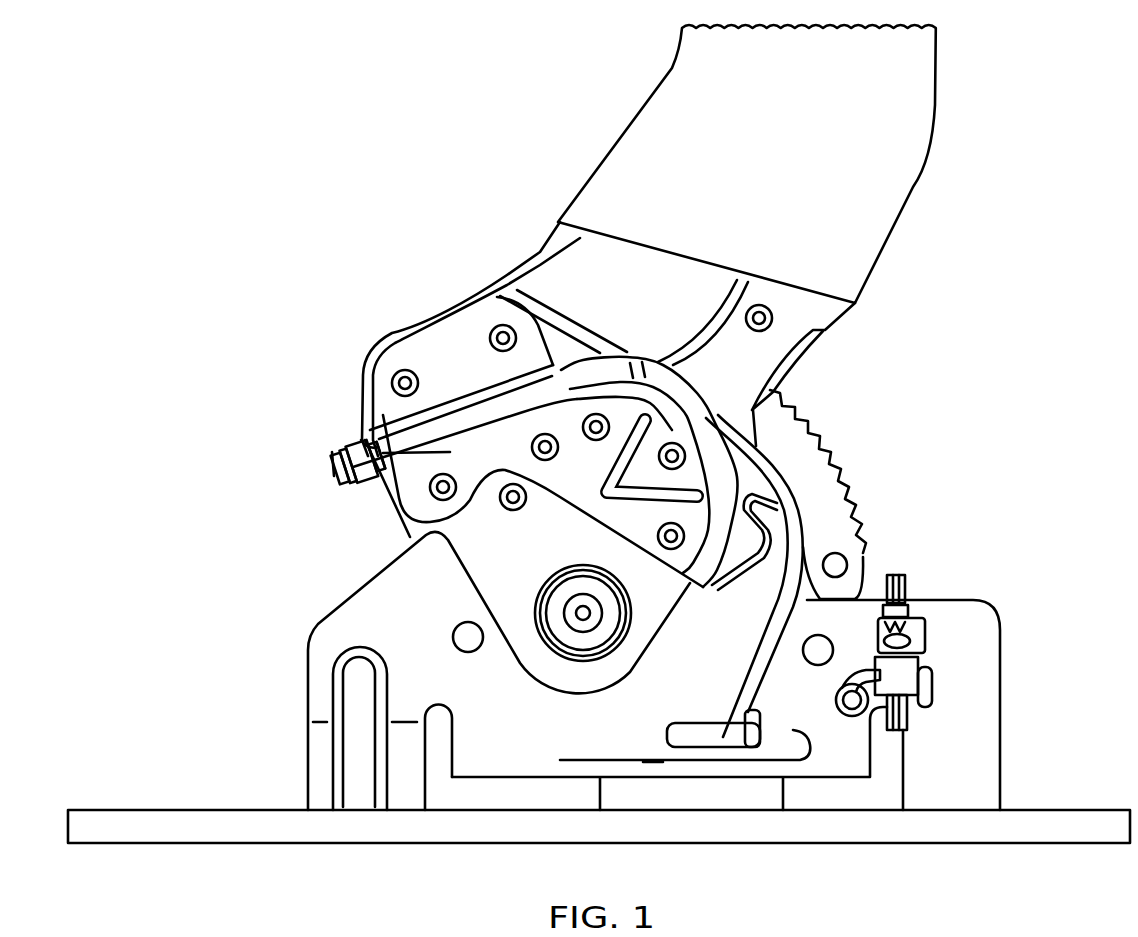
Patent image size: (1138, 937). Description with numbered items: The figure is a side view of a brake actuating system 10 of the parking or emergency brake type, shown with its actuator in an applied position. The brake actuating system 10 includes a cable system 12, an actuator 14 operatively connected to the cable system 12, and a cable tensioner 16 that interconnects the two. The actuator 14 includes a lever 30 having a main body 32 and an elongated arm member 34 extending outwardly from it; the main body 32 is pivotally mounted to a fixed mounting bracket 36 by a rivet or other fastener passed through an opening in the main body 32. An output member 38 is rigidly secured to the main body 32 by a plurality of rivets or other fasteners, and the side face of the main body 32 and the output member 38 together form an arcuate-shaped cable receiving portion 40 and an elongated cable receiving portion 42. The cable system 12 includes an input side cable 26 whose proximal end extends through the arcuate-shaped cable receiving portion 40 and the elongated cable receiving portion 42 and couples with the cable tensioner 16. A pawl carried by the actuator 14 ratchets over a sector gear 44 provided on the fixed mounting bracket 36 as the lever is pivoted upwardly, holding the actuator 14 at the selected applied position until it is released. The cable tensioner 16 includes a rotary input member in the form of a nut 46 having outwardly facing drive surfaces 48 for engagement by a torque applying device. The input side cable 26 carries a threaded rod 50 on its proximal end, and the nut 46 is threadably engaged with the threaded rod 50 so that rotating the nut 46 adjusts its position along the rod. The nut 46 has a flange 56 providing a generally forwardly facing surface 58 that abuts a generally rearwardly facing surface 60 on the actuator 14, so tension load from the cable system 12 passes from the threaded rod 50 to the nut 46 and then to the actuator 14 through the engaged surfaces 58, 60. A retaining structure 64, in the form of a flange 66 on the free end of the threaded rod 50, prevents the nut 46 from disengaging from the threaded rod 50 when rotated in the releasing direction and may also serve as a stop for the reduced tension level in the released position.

The brake actuating system 10 is at (320, 266).
The cable system 12 is at (788, 512).
The actuator 14 is at (608, 309).
The cable tensioner 16 is at (349, 447).
The input side cable 26 is at (790, 515).
The lever 30 is at (548, 265).
The main body 32 is at (465, 300).
The elongated arm member 34 is at (672, 115).
The fixed mounting bracket 36 is at (358, 752).
The output member 38 is at (428, 347).
The arcuate-shaped cable receiving portion 40 is at (683, 417).
The elongated cable receiving portion 42 is at (473, 415).
The sector gear 44 is at (783, 437).
The nut 46 is at (357, 473).
The drive surfaces 48 is at (360, 450).
The threaded rod 50 is at (340, 450).
The flange 56 is at (363, 443).
The forwardly facing surface 58 is at (450, 452).
The rearwardly facing surface 60 is at (373, 473).
The retaining structure 64 is at (318, 466).
The flange 66 is at (343, 480).